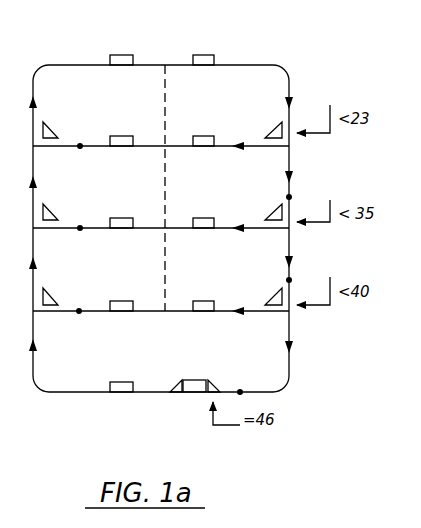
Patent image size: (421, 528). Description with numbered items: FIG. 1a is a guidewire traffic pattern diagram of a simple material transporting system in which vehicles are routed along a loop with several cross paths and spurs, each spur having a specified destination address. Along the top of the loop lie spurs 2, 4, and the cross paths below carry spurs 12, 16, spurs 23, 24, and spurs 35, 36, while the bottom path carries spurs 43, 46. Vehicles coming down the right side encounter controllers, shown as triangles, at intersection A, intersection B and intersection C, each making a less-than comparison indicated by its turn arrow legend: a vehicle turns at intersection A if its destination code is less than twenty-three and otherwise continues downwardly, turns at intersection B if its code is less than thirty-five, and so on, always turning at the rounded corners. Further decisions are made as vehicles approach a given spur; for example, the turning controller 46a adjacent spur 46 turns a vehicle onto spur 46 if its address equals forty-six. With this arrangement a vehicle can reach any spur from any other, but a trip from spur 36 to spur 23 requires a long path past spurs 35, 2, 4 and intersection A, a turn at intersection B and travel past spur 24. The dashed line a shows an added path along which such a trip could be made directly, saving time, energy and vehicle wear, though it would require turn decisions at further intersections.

The spur 2 is at (121, 50).
The spur 4 is at (203, 50).
The spur 12 is at (121, 131).
The spur 16 is at (203, 131).
The spur 23 is at (121, 213).
The spur 24 is at (203, 213).
The spur 35 is at (121, 296).
The spur 36 is at (203, 296).
The spur 43 is at (121, 377).
The spur 46 is at (188, 377).
The turning controller 46a is at (217, 384).
The dashed line a is at (165, 251).
The intersection A is at (292, 150).
The intersection B is at (292, 232).
The intersection C is at (292, 315).